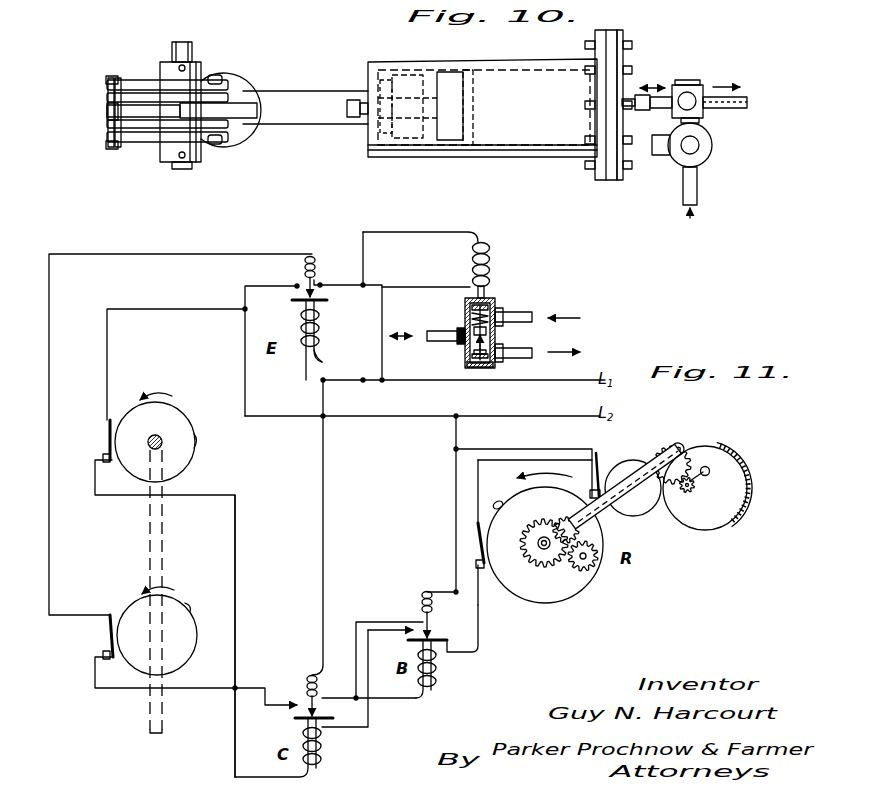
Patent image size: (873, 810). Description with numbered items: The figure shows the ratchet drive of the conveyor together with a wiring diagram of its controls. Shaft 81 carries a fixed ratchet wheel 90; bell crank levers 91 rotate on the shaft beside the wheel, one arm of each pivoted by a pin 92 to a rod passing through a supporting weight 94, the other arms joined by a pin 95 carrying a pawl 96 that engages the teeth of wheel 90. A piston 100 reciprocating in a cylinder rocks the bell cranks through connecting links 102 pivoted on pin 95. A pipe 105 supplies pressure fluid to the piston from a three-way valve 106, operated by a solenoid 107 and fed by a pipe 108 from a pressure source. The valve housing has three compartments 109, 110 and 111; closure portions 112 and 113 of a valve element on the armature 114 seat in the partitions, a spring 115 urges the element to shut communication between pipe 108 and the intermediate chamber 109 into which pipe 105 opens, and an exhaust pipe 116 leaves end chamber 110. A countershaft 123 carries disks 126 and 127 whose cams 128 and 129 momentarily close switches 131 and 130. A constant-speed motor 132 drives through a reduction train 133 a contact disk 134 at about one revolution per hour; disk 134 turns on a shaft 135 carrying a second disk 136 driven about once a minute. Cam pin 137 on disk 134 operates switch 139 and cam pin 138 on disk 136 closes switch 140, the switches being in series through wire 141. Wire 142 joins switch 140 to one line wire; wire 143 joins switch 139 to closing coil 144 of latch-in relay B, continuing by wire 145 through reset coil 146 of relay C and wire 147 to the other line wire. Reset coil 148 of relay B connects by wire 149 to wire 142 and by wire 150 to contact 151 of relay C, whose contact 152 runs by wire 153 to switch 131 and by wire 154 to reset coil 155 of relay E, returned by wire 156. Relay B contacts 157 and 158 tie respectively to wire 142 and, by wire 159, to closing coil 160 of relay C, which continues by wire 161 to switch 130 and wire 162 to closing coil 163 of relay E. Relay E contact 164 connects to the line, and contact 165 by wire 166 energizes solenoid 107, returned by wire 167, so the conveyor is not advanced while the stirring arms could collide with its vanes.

In FIG. 10, the shaft 81 is at (176, 55).
In FIG. 10, the ratchet wheel 90 is at (238, 106).
In FIG. 10, the bell crank levers 91 is at (120, 80).
In FIG. 10, the pin 92 is at (220, 78).
In FIG. 10, the supporting weight 94 is at (238, 136).
In FIG. 10, the pin 95 is at (110, 80).
In FIG. 10, the pawl 96 is at (118, 112).
In FIG. 10, the piston 100 is at (478, 93).
In FIG. 10, the connecting links 102 is at (290, 125).
In FIG. 10, the pipe 105 is at (650, 100).
In FIG. 11, the pipe 105 is at (430, 334).
In FIG. 10, the three-way valve 106 is at (700, 82).
In FIG. 11, the three-way valve 106 is at (490, 300).
In FIG. 10, the solenoid 107 is at (716, 146).
In FIG. 11, the solenoid 107 is at (490, 252).
In FIG. 10, the pipe 108 is at (697, 196).
In FIG. 11, the pipe 108 is at (535, 316).
In FIG. 11, the intermediate compartment 109 is at (487, 332).
In FIG. 11, the end compartment 110 is at (472, 367).
In FIG. 11, the compartment 111 is at (470, 314).
In FIG. 11, the closure portion 112 is at (468, 360).
In FIG. 11, the closure portion 113 is at (470, 345).
In FIG. 11, the armature 114 is at (476, 291).
In FIG. 11, the spring 115 is at (492, 310).
In FIG. 10, the exhaust pipe 116 is at (735, 101).
In FIG. 11, the exhaust pipe 116 is at (532, 356).
In FIG. 11, the countershaft 123 is at (163, 448).
In FIG. 11, the disk 126 is at (178, 660).
In FIG. 11, the disk 127 is at (172, 418).
In FIG. 11, the cams 128 is at (190, 608).
In FIG. 11, the cams 129 is at (198, 441).
In FIG. 11, the switch 130 is at (106, 441).
In FIG. 11, the switch 131 is at (108, 645).
In FIG. 11, the motor 132 is at (750, 476).
In FIG. 11, the speed reduction gear train 133 is at (690, 491).
In FIG. 11, the contact disk 134 is at (557, 598).
In FIG. 11, the shaft 135 is at (622, 514).
In FIG. 11, the second contact disk 136 is at (642, 514).
In FIG. 11, the cam pin 137 is at (502, 506).
In FIG. 11, the cam pin 138 is at (670, 452).
In FIG. 11, the switch 139 is at (478, 566).
In FIG. 11, the switch 140 is at (594, 458).
In FIG. 11, the wire 141 is at (478, 485).
In FIG. 11, the wire 142 is at (453, 448).
In FIG. 11, the wire 143 is at (477, 652).
In FIG. 11, the closing coil 144 is at (437, 680).
In FIG. 11, the wire 145 is at (390, 700).
In FIG. 11, the reset coil 146 is at (306, 682).
In FIG. 11, the wire 147 is at (323, 524).
In FIG. 11, the reset coil 148 is at (421, 604).
In FIG. 11, the wire 149 is at (445, 586).
In FIG. 11, the wire 150 is at (371, 618).
In FIG. 11, the contact 151 is at (327, 705).
In FIG. 11, the contact 152 is at (285, 708).
In FIG. 11, the wire 153 is at (100, 695).
In FIG. 11, the wire 154 is at (49, 540).
In FIG. 11, the reset coil 155 is at (312, 259).
In FIG. 11, the wire 156 is at (316, 316).
In FIG. 11, the contact 157 is at (479, 620).
In FIG. 11, the contact 158 is at (410, 634).
In FIG. 11, the wire 159 is at (364, 730).
In FIG. 11, the closing coil 160 is at (319, 763).
In FIG. 11, the wire 161 is at (235, 548).
In FIG. 11, the wire 162 is at (108, 355).
In FIG. 11, the closing coil 163 is at (318, 354).
In FIG. 11, the relay contact 164 is at (296, 286).
In FIG. 11, the relay contact 165 is at (318, 285).
In FIG. 11, the wire 166 is at (369, 234).
In FIG. 11, the wire 167 is at (371, 288).